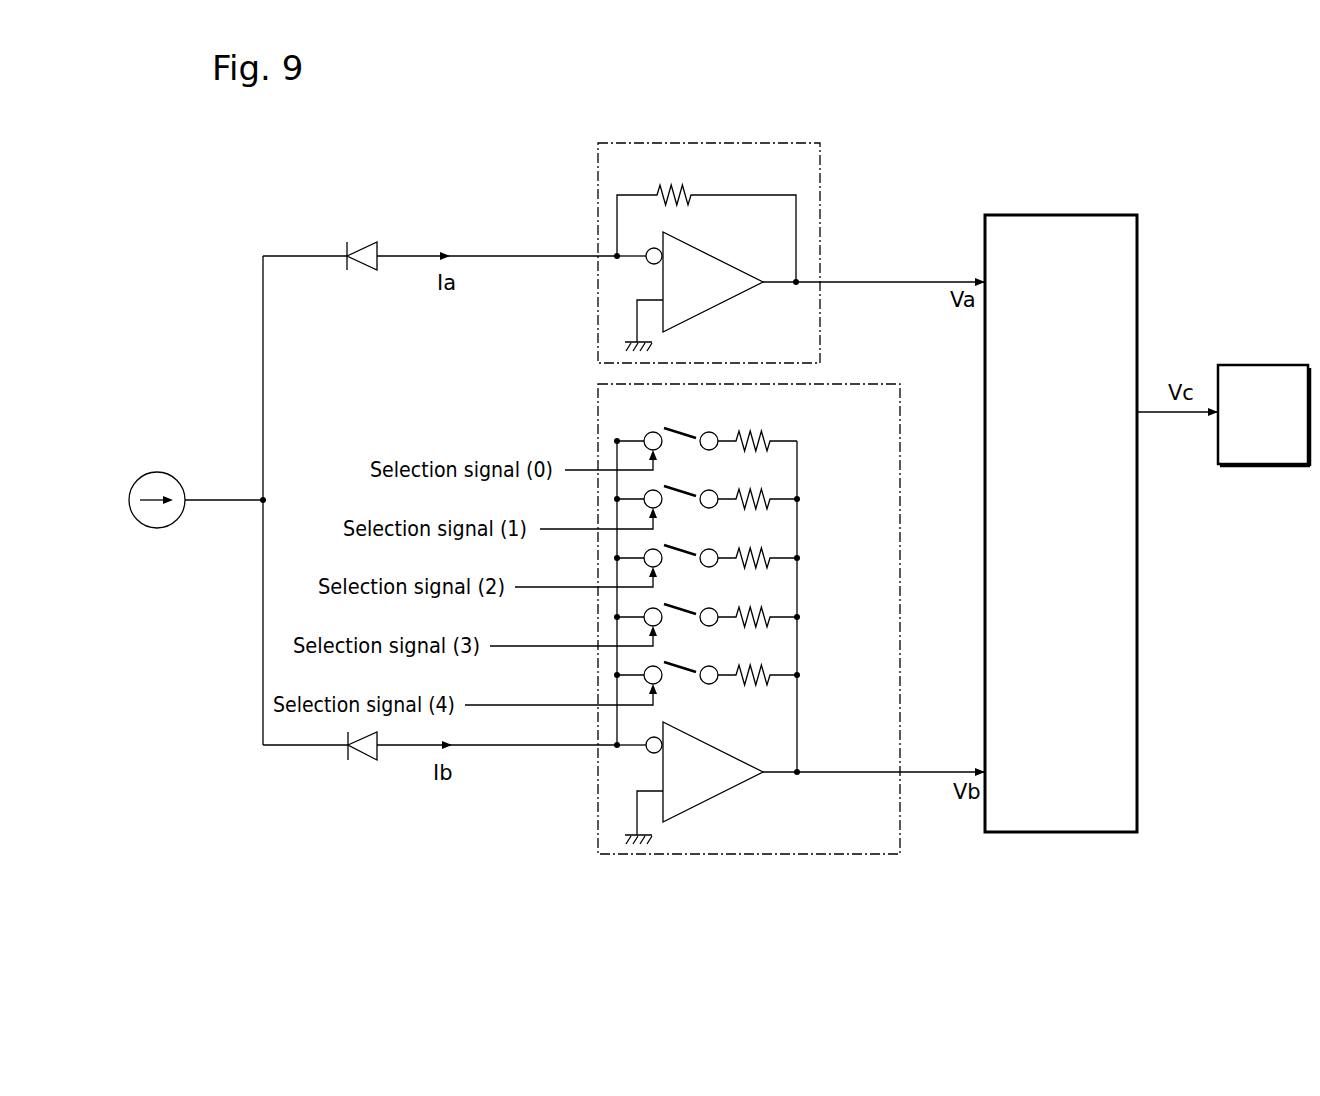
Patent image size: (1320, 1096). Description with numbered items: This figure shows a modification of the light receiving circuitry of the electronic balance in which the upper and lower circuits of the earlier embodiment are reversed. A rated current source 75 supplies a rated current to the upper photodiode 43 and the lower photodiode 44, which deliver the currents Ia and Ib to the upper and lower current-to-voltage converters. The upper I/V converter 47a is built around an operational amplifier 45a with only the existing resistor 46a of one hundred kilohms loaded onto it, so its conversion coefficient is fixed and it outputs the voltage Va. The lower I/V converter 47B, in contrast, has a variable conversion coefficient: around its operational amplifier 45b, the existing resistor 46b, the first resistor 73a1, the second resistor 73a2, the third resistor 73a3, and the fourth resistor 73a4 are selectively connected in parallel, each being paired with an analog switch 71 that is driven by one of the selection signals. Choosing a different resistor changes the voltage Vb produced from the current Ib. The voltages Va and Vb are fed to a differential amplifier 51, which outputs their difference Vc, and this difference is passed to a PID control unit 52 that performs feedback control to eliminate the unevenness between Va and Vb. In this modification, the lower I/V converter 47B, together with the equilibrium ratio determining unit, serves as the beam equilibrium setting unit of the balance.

The rated current source 75 is at (160, 472).
The upper photodiode 43 is at (366, 266).
The lower photodiode 44 is at (366, 757).
The existing resistor 46a is at (681, 187).
The operational amplifier 45a is at (708, 298).
The upper I/V converter 47a is at (820, 182).
The analog switch 71 is at (692, 422).
The existing resistor 46b is at (757, 430).
The first resistor 73a1 is at (768, 497).
The second resistor 73a2 is at (768, 556).
The third resistor 73a3 is at (768, 615).
The fourth resistor 73a4 is at (768, 673).
The operational amplifier 45b is at (708, 785).
The lower I/V converter 47B is at (810, 855).
The differential amplifier 51 is at (1068, 215).
The PID control unit 52 is at (1268, 365).